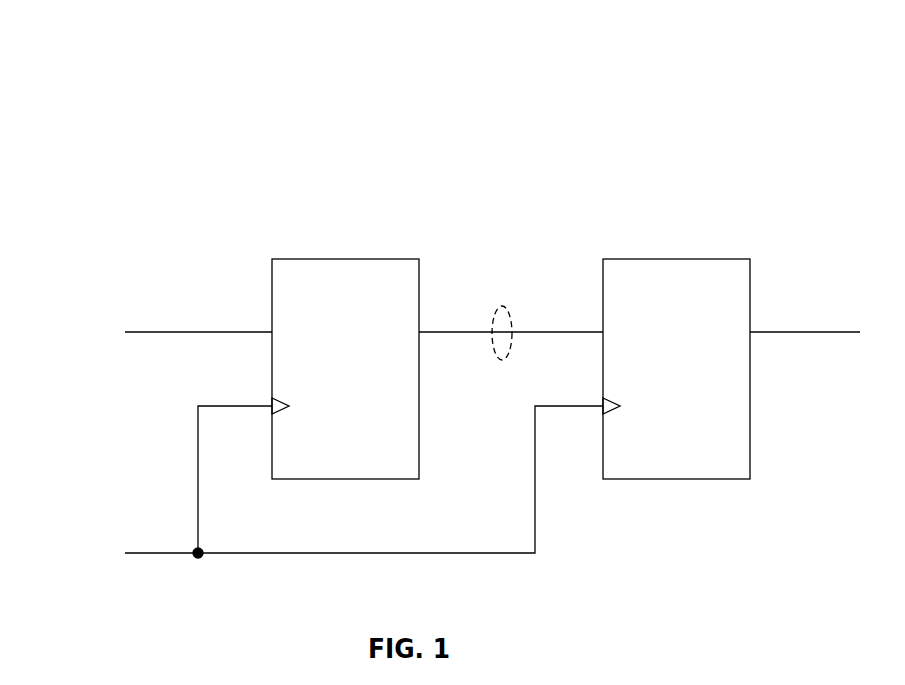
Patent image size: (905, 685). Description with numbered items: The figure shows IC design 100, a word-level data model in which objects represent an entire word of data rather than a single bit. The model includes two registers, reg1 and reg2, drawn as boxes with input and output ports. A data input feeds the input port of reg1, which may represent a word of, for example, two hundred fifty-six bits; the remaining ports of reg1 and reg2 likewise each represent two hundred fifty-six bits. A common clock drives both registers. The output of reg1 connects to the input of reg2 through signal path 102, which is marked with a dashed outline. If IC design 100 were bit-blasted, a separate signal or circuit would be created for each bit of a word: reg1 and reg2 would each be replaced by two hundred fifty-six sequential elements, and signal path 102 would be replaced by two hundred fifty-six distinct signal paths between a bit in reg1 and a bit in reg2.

The IC design 100 is at (707, 137).
The signal path 102 is at (498, 308).
The register reg1 is at (308, 259).
The register reg2 is at (640, 259).